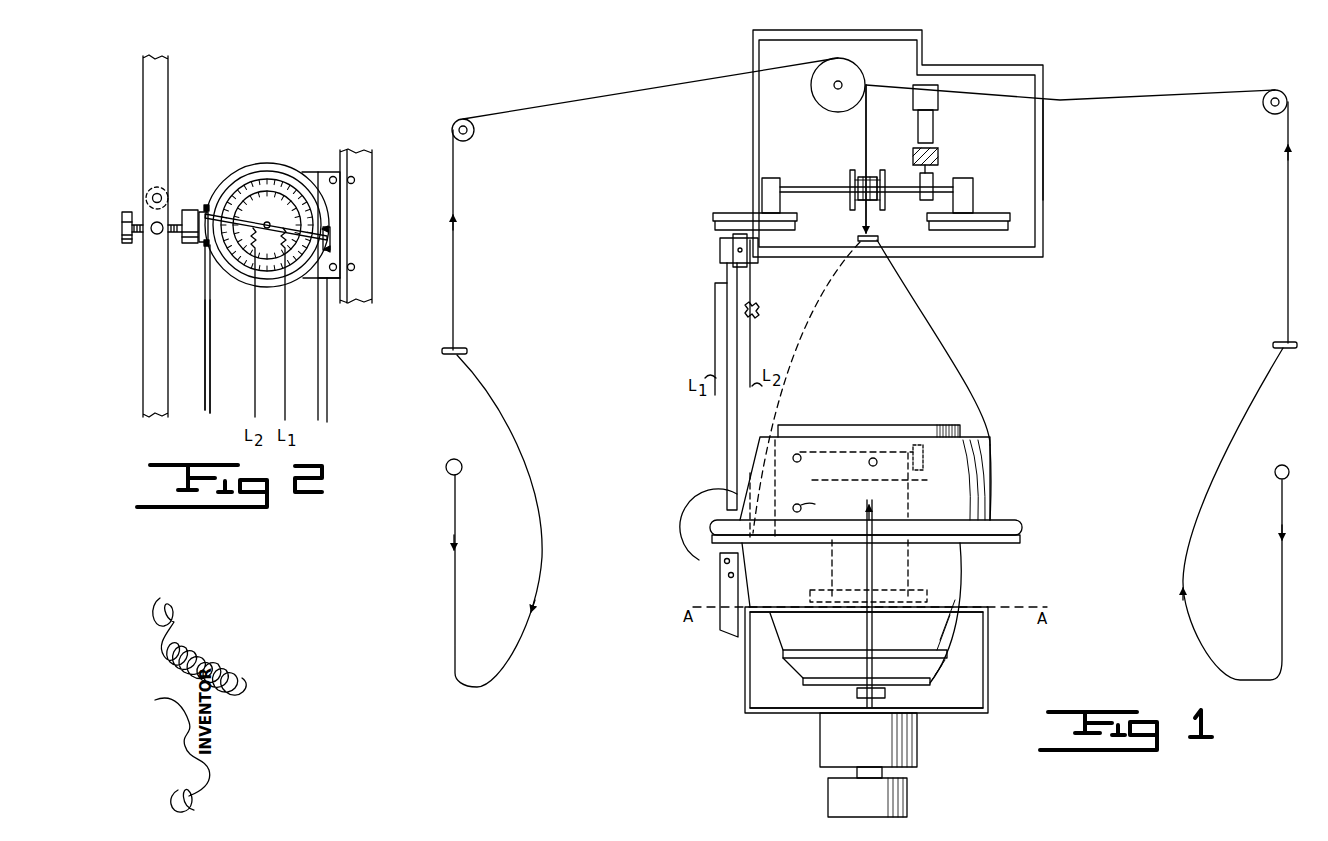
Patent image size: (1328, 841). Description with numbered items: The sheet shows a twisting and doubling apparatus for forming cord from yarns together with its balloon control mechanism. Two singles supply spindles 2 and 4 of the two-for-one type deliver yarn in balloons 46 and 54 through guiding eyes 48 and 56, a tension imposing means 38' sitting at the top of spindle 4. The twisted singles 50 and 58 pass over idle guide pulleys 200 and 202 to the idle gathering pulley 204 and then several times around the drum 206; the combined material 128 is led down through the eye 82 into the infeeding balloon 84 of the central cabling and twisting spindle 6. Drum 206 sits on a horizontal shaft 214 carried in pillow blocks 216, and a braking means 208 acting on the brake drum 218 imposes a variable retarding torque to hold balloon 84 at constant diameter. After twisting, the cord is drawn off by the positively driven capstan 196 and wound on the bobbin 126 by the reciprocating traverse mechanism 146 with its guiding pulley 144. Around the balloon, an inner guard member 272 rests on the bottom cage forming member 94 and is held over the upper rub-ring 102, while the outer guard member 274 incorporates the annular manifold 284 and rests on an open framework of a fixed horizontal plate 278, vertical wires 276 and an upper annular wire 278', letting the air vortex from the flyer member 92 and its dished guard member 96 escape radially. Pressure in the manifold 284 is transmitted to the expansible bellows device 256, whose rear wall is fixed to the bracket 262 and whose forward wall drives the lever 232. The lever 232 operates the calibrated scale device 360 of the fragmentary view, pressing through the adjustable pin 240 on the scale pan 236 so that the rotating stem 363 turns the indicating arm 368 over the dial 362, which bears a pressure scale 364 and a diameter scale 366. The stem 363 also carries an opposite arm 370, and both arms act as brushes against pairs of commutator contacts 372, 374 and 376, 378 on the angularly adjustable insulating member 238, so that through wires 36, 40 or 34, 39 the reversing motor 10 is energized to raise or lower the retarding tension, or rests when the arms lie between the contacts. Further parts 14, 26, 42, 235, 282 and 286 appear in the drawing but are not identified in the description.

In FIG. 1, the singles supply spindle 2 is at (442, 519).
In FIG. 1, the singles supply spindle 4 is at (1222, 406).
In FIG. 1, the central cabling and twisting spindle 6 is at (995, 445).
In FIG. 1, the motor 10 is at (938, 97).
In FIG. 1, the lower housing 14 is at (905, 750).
In FIG. 1, the base 26 is at (907, 805).
In FIG. 2, the wire 34 is at (212, 398).
In FIG. 1, the wire 34 is at (1043, 215).
In FIG. 2, the wire 36 is at (205, 405).
In FIG. 1, the wire 36 is at (1043, 157).
In FIG. 1, the tension imposing means 38' is at (1298, 462).
In FIG. 2, the wire 39 is at (330, 412).
In FIG. 2, the wire 40 is at (318, 398).
In FIG. 1, the wire 40 is at (790, 40).
In FIG. 1, the spring 42 is at (760, 310).
In FIG. 1, the balloon 46 is at (523, 480).
In FIG. 1, the guiding eye 48 is at (467, 348).
In FIG. 1, the twisted single 50 is at (455, 242).
In FIG. 1, the balloon 54 is at (1190, 532).
In FIG. 1, the guiding eye 56 is at (1270, 348).
In FIG. 1, the twisted single 58 is at (1287, 252).
In FIG. 1, the eye 82 is at (878, 240).
In FIG. 1, the infeeding balloon 84 is at (990, 495).
In FIG. 1, the flyer member 92 is at (925, 685).
In FIG. 1, the bottom cage forming member 94 is at (890, 652).
In FIG. 1, the upwardly dished guard member 96 is at (800, 663).
In FIG. 1, the upper rub-ring 102 is at (935, 436).
In FIG. 1, the bobbin 126 is at (910, 568).
In FIG. 1, the doubled cord 128 is at (960, 375).
In FIG. 1, the guiding pulley 144 is at (828, 512).
In FIG. 1, the reciprocating traverse mechanism 146 is at (787, 497).
In FIG. 1, the capstan 196 is at (923, 460).
In FIG. 1, the idle guide pulley 200 is at (475, 135).
In FIG. 1, the idle guide pulley 202 is at (1268, 116).
In FIG. 1, the idle gathering pulley 204 is at (858, 79).
In FIG. 1, the drum 206 is at (875, 175).
In FIG. 1, the retarding or braking means 208 is at (948, 150).
In FIG. 1, the horizontal shaft 214 is at (825, 193).
In FIG. 1, the pillow blocks 216 is at (772, 180).
In FIG. 1, the brake drum 218 is at (923, 200).
In FIG. 1, the lever 232 is at (727, 425).
In FIG. 2, the support bar 235 is at (165, 115).
In FIG. 2, the scale pan 236 is at (188, 207).
In FIG. 2, the annular electrically insulating member 238 is at (290, 165).
In FIG. 2, the adjustable pin 240 is at (132, 240).
In FIG. 1, the expansible bellows device 256 is at (705, 560).
In FIG. 1, the bracket 262 is at (722, 628).
In FIG. 1, the inner guard member 272 is at (965, 492).
In FIG. 1, the outer guard member 274 is at (1000, 556).
In FIG. 1, the vertical wires 276 is at (860, 705).
In FIG. 1, the fixed horizontal plate 278 is at (865, 727).
In FIG. 1, the upper annular wire 278' is at (866, 596).
In FIG. 1, the lower wall 282 is at (990, 590).
In FIG. 1, the annular manifold 284 is at (1020, 527).
In FIG. 1, the shaft 286 is at (865, 545).
In FIG. 2, the calibrated scale device 360 is at (310, 272).
In FIG. 1, the calibrated scale device 360 is at (716, 260).
In FIG. 2, the dial 362 is at (250, 275).
In FIG. 1, the dial 362 is at (758, 258).
In FIG. 2, the rotating stem 363 is at (280, 216).
In FIG. 2, the scale 364 is at (303, 173).
In FIG. 2, the scale 366 is at (330, 210).
In FIG. 2, the indicating arm 368 is at (245, 205).
In FIG. 2, the arm 370 is at (280, 222).
In FIG. 2, the commutator type contact 372 is at (208, 206).
In FIG. 2, the commutator type contact 374 is at (205, 250).
In FIG. 2, the commutator type contact 376 is at (330, 252).
In FIG. 2, the commutator type contact 378 is at (330, 232).